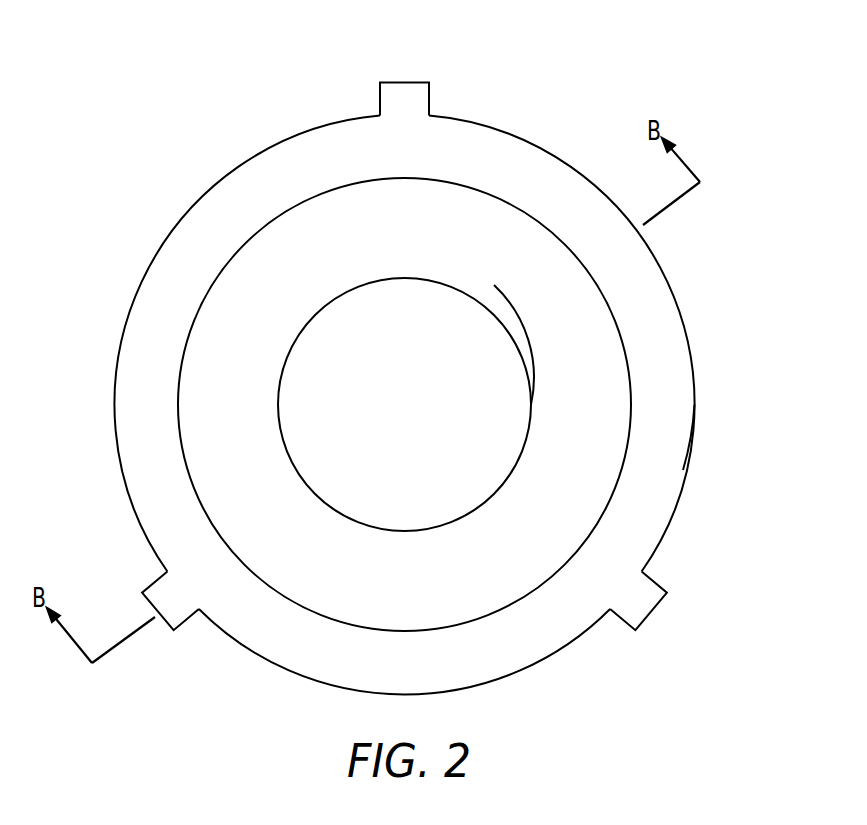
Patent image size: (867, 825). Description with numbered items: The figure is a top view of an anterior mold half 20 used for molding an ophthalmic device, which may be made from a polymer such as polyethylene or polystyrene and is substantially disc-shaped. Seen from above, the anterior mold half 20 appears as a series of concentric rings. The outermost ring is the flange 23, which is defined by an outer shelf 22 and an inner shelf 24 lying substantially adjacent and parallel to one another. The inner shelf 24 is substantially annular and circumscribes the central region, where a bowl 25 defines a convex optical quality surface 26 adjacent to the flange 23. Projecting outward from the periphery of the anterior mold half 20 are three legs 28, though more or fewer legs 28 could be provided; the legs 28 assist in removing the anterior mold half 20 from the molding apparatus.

The anterior mold half 20 is at (443, 351).
The outer shelf 22 is at (657, 494).
The flange 23 is at (716, 439).
The inner shelf 24 is at (590, 446).
The bowl 25 is at (529, 316).
The optical quality surface 26 is at (415, 420).
The legs 28 is at (403, 82).